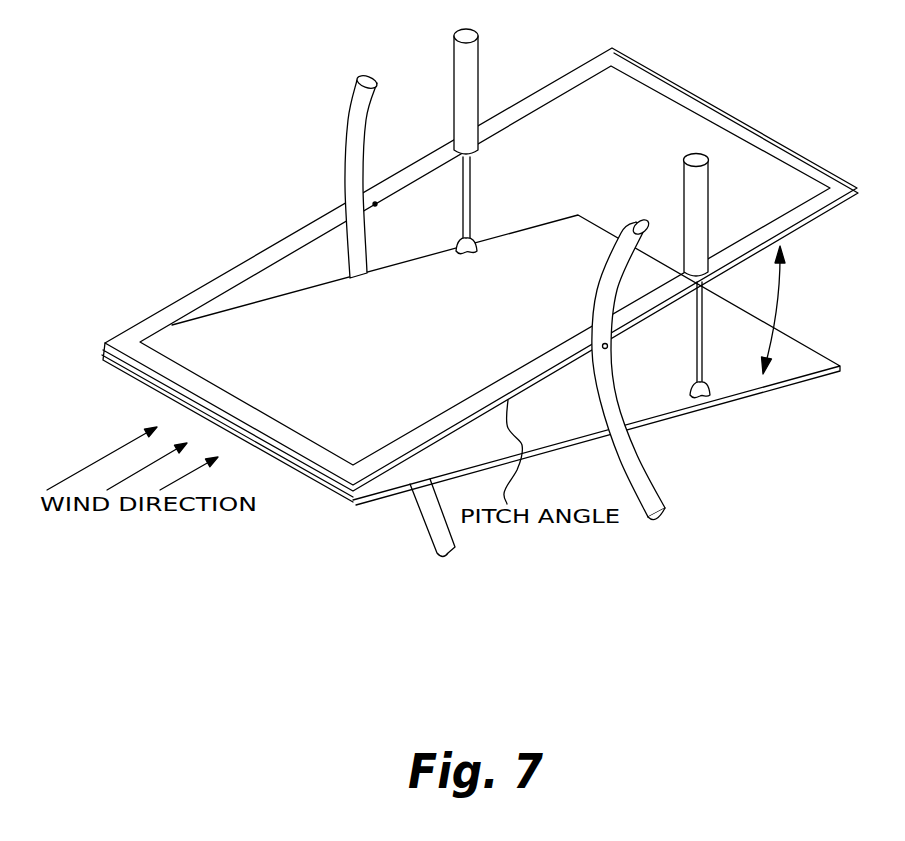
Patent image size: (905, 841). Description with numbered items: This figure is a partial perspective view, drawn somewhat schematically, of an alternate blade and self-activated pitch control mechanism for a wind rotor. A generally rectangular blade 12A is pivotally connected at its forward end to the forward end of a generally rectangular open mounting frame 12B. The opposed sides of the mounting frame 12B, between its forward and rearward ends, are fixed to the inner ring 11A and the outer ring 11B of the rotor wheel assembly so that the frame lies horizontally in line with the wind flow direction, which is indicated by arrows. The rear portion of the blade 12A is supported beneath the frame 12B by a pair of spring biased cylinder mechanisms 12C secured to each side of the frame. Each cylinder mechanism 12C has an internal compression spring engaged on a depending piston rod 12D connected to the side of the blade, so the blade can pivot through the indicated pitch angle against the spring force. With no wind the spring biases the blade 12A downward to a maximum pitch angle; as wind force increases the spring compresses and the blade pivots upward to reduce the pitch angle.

The inner ring 11A is at (645, 478).
The outer ring 11B is at (348, 118).
The blade 12A is at (451, 358).
The mounting frame 12B is at (270, 248).
The spring biased cylinder mechanism 12C is at (470, 55).
The piston rod 12D is at (470, 188).